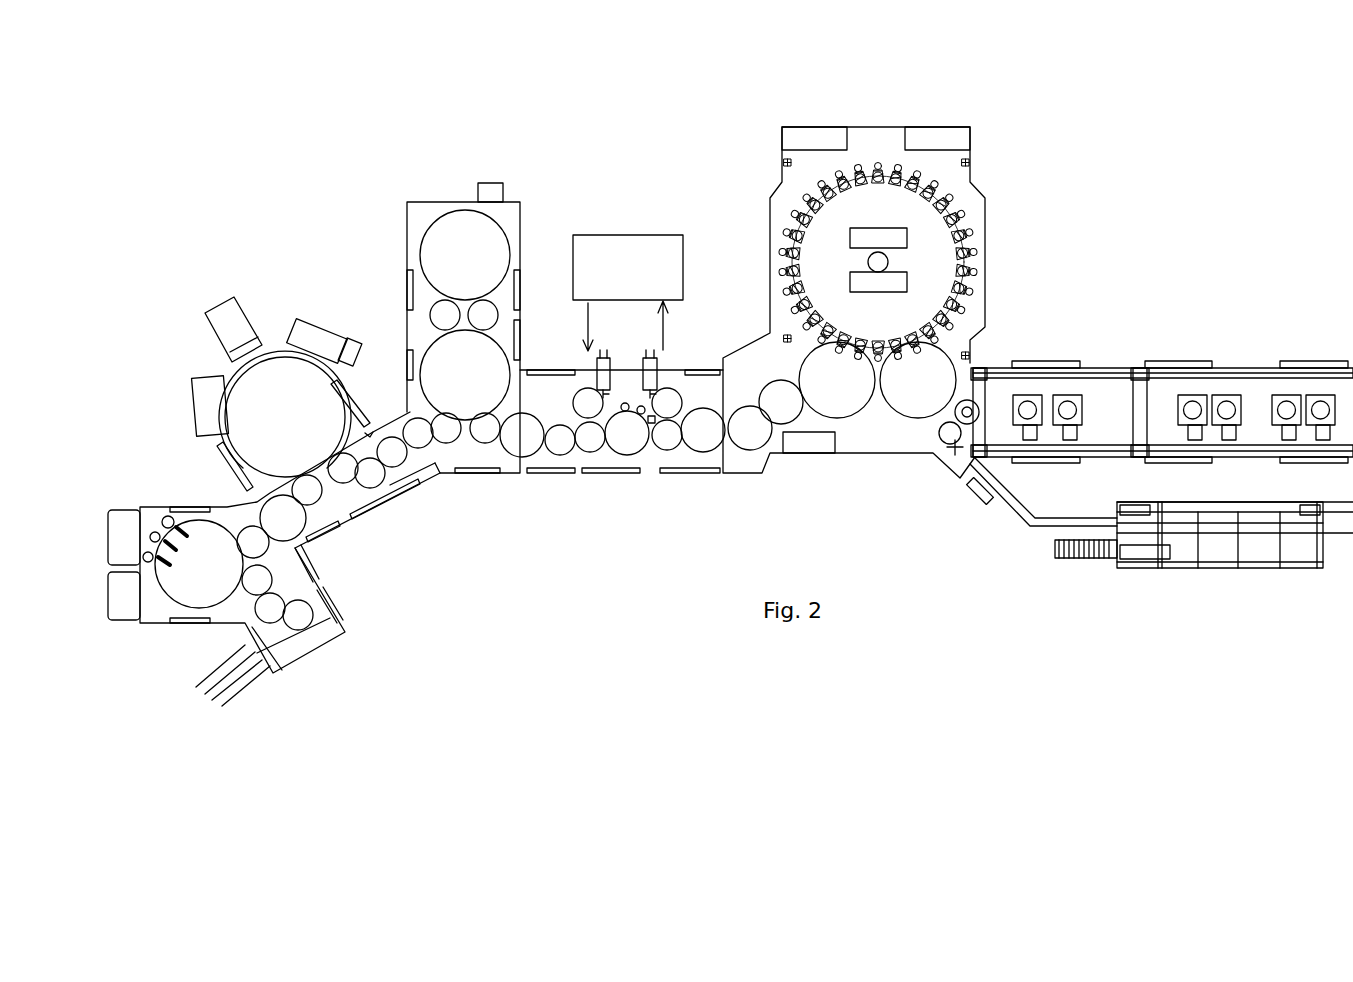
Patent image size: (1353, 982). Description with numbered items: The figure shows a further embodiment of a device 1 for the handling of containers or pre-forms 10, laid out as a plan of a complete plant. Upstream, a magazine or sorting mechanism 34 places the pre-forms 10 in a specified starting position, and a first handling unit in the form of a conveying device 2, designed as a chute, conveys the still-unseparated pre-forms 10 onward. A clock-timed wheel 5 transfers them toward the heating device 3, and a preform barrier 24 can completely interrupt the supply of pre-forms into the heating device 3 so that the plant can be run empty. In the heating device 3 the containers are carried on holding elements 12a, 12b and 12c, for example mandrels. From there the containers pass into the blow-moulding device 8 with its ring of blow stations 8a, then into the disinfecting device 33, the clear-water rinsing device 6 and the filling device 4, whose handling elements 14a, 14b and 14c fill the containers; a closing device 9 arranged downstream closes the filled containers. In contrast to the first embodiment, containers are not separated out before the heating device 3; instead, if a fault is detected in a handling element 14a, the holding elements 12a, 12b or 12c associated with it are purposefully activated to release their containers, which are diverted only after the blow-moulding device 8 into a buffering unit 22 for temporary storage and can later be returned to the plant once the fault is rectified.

The device 1 is at (847, 490).
The conveying device 2 is at (1000, 497).
The heating device 3 is at (1231, 351).
The filling device 4 is at (168, 498).
The clock-timed wheel 5 is at (948, 440).
The clear-water rinsing device 6 is at (305, 392).
The blow-moulding device 8 is at (968, 202).
The filling stations 8a is at (900, 172).
The closing device 9 is at (300, 607).
The containers/pre-forms 10 is at (152, 532).
The holding element 12a is at (626, 412).
The holding element 12b is at (656, 418).
The holding element 12c is at (668, 418).
The handling element 14a is at (173, 523).
The handling element 14b is at (172, 545).
The handling element 14c is at (150, 562).
The buffering unit 22 is at (628, 312).
The preform barrier 24 is at (973, 495).
The disinfecting device 33 is at (480, 403).
The sorting mechanism 34 is at (1143, 542).